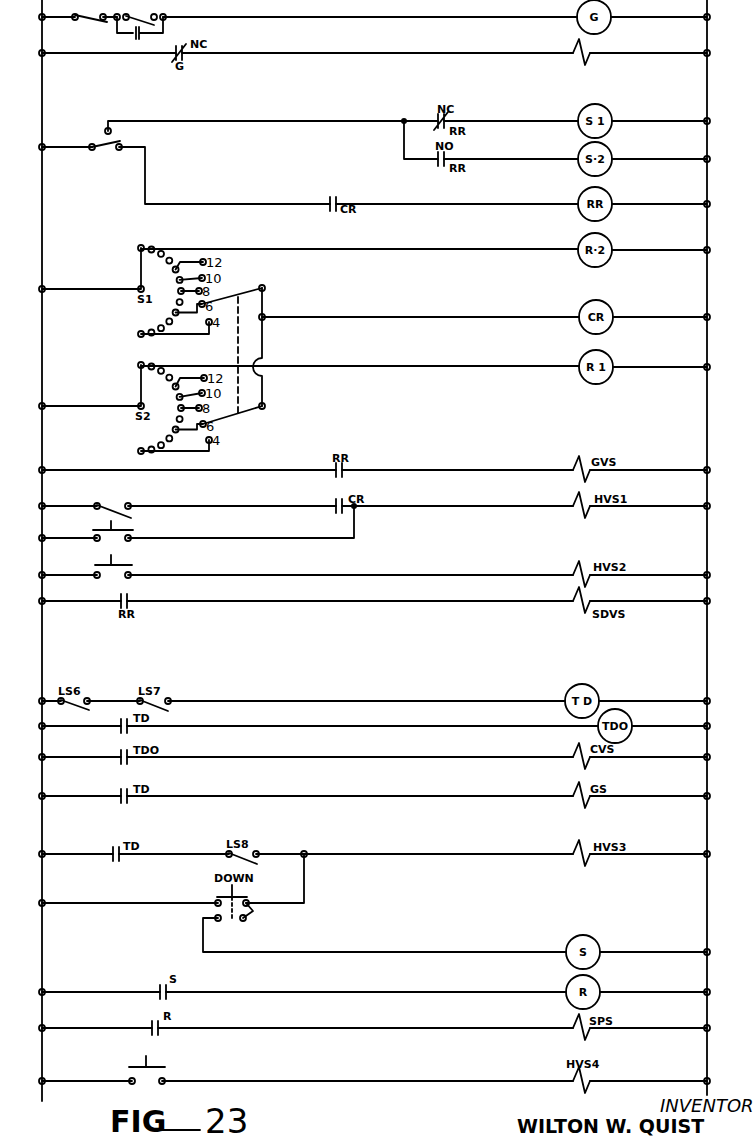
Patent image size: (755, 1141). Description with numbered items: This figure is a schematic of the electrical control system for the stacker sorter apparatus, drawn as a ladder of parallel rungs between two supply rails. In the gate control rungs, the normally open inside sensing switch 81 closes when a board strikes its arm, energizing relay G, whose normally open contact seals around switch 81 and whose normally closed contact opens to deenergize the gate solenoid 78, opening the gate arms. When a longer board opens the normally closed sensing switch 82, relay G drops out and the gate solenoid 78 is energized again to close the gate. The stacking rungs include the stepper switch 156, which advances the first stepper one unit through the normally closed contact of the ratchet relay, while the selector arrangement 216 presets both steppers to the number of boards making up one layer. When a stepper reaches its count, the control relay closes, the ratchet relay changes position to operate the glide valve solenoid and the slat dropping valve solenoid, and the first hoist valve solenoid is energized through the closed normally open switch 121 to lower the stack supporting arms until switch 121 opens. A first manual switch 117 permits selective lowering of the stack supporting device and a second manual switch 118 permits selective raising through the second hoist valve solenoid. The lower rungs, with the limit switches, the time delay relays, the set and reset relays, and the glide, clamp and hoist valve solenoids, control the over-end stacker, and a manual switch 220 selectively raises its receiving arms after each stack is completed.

The gate solenoid 78 is at (594, 47).
The inside sensing switch 81 is at (145, 26).
The sensing switch 82 is at (89, 19).
The first manual switch 117 is at (121, 526).
The second manual switch 118 is at (141, 564).
The normally open switch 121 is at (124, 501).
The stepper switch 156 is at (106, 152).
The selector arrangement 216 is at (239, 346).
The manual switch 220 is at (176, 1068).